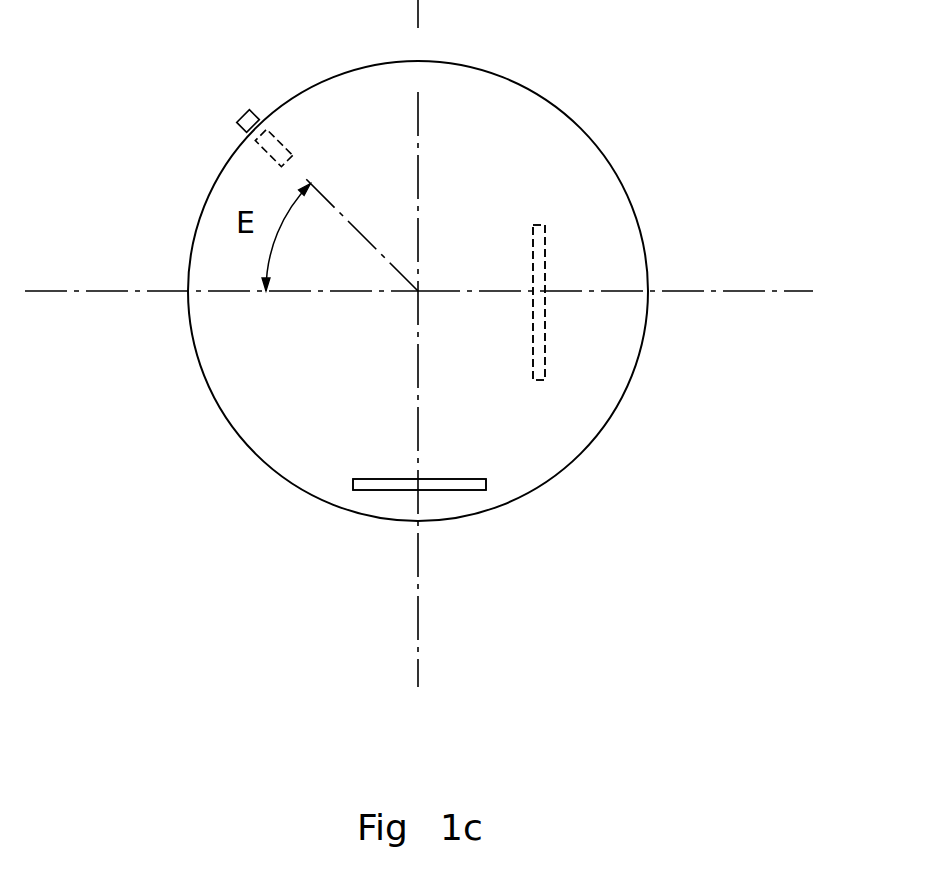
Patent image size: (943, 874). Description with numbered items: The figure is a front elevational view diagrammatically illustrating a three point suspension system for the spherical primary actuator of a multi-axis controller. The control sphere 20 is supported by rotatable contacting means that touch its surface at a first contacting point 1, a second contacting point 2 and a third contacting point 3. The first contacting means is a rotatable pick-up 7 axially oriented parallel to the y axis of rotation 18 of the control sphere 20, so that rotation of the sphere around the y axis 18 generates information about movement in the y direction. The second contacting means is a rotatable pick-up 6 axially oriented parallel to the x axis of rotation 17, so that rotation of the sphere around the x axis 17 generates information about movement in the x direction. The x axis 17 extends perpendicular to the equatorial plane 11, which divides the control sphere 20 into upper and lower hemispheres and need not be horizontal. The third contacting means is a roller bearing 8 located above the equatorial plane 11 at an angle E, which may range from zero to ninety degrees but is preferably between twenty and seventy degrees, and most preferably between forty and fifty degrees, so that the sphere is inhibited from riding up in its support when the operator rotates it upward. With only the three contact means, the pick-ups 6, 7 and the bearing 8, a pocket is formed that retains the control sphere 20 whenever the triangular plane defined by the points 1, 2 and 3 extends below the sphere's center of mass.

The first contacting point 1 is at (408, 456).
The second contacting point 2 is at (509, 302).
The third contacting point 3 is at (272, 147).
The rotatable pick-up 6 is at (489, 302).
The rotatable pick-up 7 is at (441, 452).
The roller bearing 8 is at (196, 88).
The equatorial plane 11 is at (221, 328).
The x axis of rotation 17 is at (501, 343).
The y axis of rotation 18 is at (633, 334).
The control sphere 20 is at (394, 303).